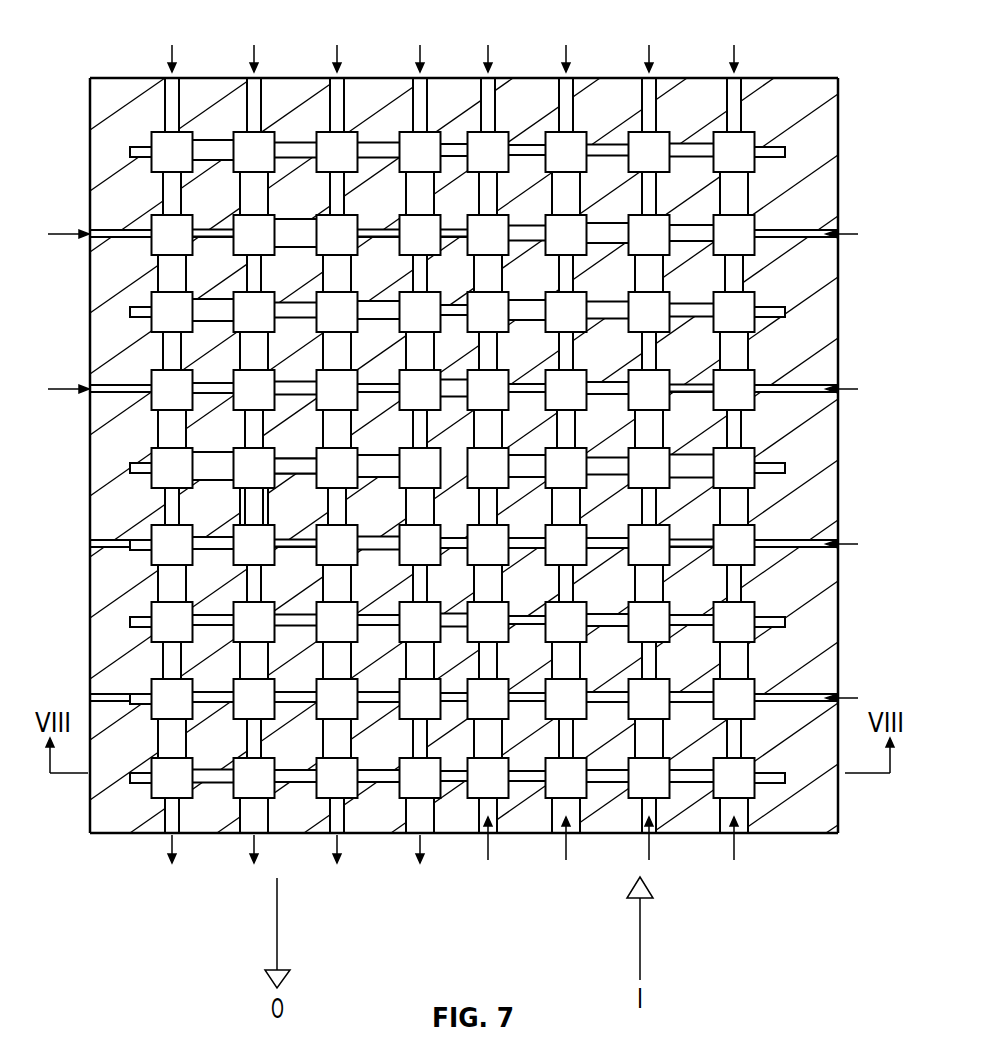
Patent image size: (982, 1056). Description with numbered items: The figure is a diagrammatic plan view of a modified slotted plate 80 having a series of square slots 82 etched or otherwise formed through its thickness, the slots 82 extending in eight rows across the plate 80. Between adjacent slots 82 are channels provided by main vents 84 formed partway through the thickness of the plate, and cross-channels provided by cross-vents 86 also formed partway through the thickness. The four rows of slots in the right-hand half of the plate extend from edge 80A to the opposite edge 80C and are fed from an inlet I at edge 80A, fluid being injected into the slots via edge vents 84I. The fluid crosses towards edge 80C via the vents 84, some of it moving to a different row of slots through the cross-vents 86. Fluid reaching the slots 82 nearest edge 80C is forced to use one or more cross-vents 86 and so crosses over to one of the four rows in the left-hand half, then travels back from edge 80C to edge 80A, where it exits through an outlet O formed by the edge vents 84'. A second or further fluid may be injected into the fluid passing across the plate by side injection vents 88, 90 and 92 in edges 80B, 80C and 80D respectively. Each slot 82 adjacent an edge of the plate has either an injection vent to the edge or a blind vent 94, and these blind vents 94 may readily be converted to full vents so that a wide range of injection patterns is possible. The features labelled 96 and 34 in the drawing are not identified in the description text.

The plate 80 is at (850, 180).
The edge of plate 80A is at (797, 838).
The edge of plate 80B is at (841, 308).
The edge of plate 80C is at (455, 75).
The edge of plate 80D is at (88, 554).
The square slots 82 is at (740, 465).
The main vents 84 is at (513, 474).
The edge vents 84' is at (319, 847).
The edge vents 84I is at (507, 836).
The cross-vents 86 is at (606, 150).
The side injection vents 88 is at (815, 232).
The side injection vents 90 is at (178, 97).
The side injection vents 92 is at (109, 228).
The blind vent 94 is at (768, 306).
The cross channel 96 is at (283, 462).
The channel segment 34 is at (248, 499).